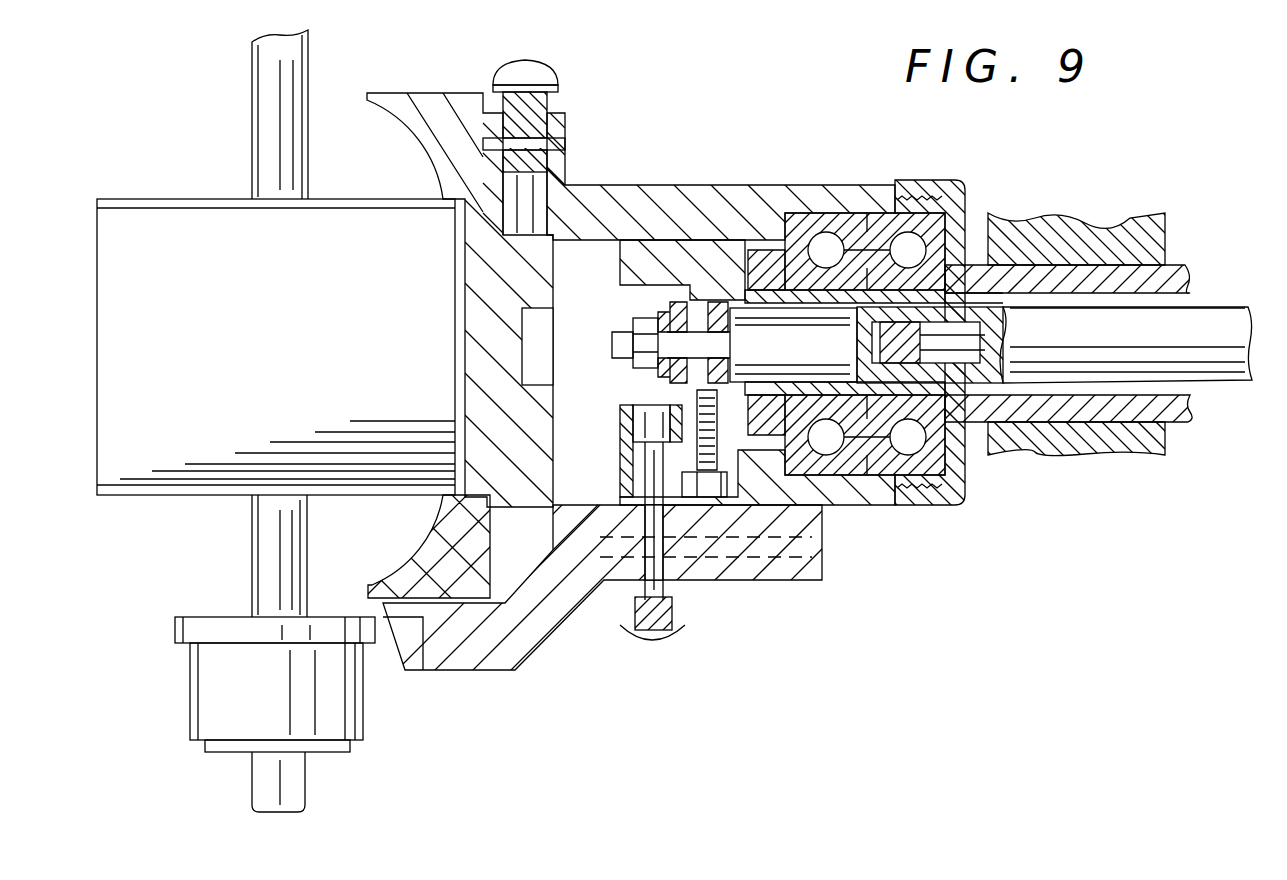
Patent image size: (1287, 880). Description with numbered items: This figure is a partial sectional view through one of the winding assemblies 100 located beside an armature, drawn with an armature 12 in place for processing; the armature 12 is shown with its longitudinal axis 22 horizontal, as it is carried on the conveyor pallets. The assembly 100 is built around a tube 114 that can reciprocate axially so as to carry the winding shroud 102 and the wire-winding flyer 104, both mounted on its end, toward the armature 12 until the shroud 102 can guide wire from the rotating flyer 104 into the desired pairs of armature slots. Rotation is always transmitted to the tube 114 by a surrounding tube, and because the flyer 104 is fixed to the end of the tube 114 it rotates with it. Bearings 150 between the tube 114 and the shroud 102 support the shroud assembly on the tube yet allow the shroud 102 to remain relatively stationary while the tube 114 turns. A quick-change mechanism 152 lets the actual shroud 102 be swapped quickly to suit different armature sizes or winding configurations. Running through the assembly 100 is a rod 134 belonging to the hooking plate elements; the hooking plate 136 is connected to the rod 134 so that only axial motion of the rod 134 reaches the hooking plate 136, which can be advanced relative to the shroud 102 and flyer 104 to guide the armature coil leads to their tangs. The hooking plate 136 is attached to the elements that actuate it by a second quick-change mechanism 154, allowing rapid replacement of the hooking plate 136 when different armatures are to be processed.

The armature 12 is at (97, 455).
The longitudinal axis 22 is at (258, 80).
The assembly 100 is at (963, 152).
The winding shroud 102 is at (393, 100).
The wire-winding flyer 104 is at (1158, 445).
The tube 114 is at (1033, 415).
The rod 134 is at (1238, 315).
The hooking plate 136 is at (525, 650).
The bearings 150 is at (872, 213).
The quick-change mechanism 152 is at (532, 72).
The quick-change mechanism 154 is at (670, 630).